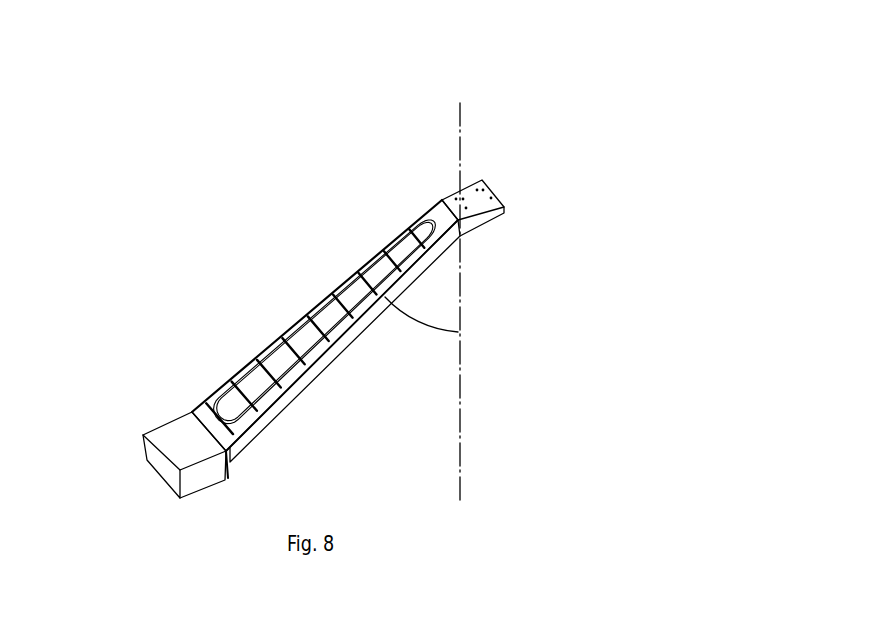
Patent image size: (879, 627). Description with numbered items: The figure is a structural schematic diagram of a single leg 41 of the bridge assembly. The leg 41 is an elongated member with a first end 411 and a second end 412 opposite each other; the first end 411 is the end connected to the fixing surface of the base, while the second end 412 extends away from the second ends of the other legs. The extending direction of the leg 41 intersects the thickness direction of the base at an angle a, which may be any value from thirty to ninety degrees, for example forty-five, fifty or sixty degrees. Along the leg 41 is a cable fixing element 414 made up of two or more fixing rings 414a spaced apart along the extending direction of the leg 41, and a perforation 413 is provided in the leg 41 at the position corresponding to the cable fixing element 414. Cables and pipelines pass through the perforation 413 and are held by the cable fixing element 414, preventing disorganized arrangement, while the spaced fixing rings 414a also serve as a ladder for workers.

The leg 41 is at (445, 85).
The first end 411 is at (492, 186).
The second end 412 is at (163, 439).
The perforation 413 is at (310, 343).
The cable fixing element 414 is at (260, 200).
The fixing ring 414a is at (387, 250).
The angle a is at (421, 306).